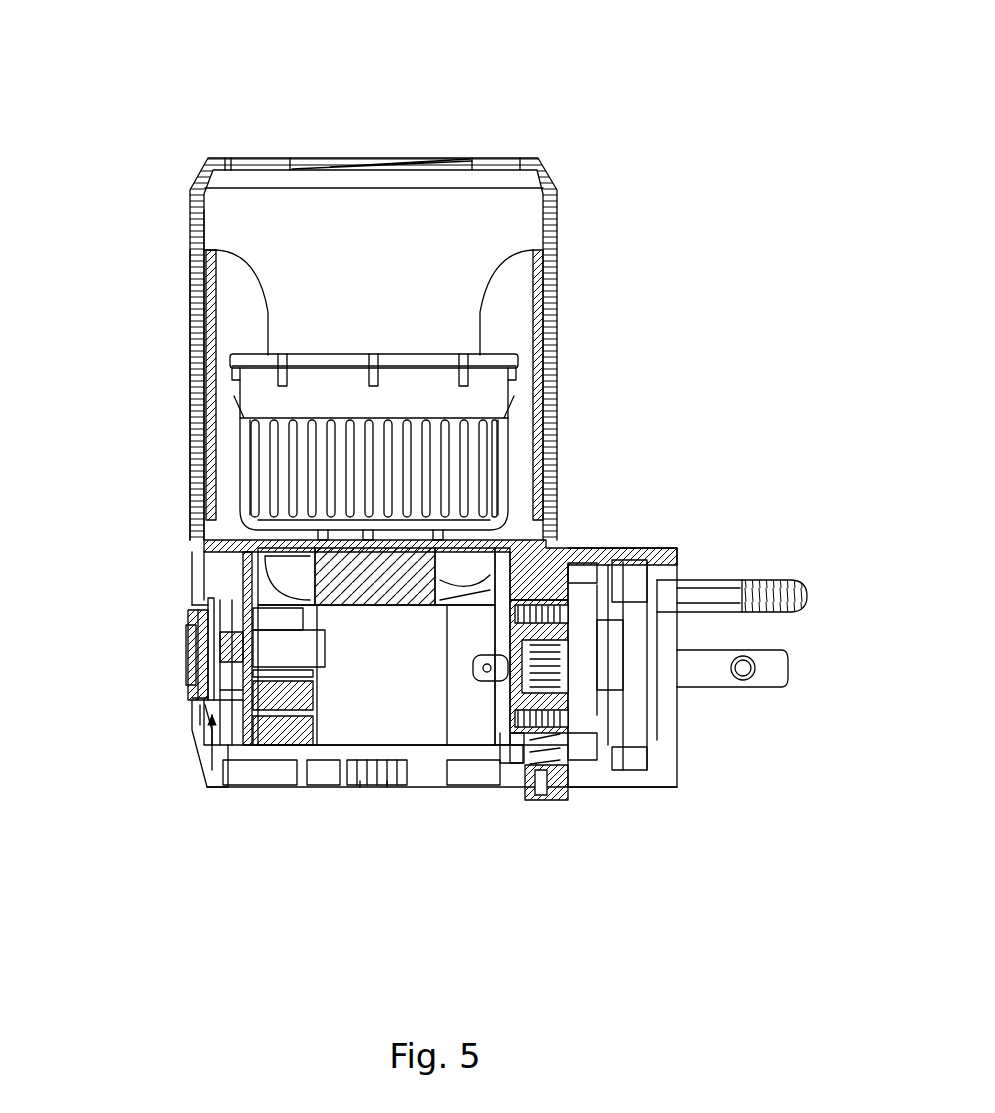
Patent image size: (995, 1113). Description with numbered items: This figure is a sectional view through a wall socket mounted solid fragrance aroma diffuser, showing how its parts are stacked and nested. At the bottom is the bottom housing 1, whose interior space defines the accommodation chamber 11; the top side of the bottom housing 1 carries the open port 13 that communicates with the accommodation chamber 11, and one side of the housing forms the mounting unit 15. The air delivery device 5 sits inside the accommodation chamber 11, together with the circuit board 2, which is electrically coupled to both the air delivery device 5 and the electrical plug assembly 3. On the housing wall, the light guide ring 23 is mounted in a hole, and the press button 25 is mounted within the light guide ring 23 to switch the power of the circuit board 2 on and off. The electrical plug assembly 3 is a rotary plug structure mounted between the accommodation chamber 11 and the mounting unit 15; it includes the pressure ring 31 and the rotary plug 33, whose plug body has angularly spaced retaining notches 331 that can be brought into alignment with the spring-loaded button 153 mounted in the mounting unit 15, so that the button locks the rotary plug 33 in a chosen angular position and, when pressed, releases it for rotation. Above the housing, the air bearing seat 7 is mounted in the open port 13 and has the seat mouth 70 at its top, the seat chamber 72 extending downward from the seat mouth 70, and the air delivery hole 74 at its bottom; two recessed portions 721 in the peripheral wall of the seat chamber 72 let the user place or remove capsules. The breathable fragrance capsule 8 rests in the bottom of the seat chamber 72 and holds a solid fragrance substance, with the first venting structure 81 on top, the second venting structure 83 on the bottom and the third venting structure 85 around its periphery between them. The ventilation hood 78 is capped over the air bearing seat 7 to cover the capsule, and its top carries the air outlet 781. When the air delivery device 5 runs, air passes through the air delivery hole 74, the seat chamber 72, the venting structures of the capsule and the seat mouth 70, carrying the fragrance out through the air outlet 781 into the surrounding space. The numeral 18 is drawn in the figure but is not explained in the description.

The bottom housing 1 is at (197, 752).
The circuit board 2 is at (260, 745).
The electrical plug assembly 3 is at (742, 576).
The air delivery device 5 is at (377, 590).
The air bearing seat 7 is at (208, 386).
The breathable fragrance capsule 8 is at (505, 391).
The accommodation chamber 11 is at (350, 702).
The open port 13 is at (226, 554).
The mounting unit 15 is at (502, 776).
The foot 18 is at (208, 788).
The light guide ring 23 is at (208, 607).
The press button 25 is at (194, 660).
The pressure ring 31 is at (538, 802).
The rotary plug 33 is at (650, 740).
The seat mouth 70 is at (210, 236).
The seat chamber 72 is at (422, 298).
The air delivery hole 74 is at (232, 522).
The ventilation hood 78 is at (547, 176).
The first venting structure 81 is at (487, 360).
The second venting structure 83 is at (490, 510).
The third venting structure 85 is at (478, 455).
The spring-loaded button 153 is at (550, 712).
The retaining notches 331 is at (580, 614).
The recessed portions 721 is at (268, 320).
The air outlet 781 is at (273, 166).